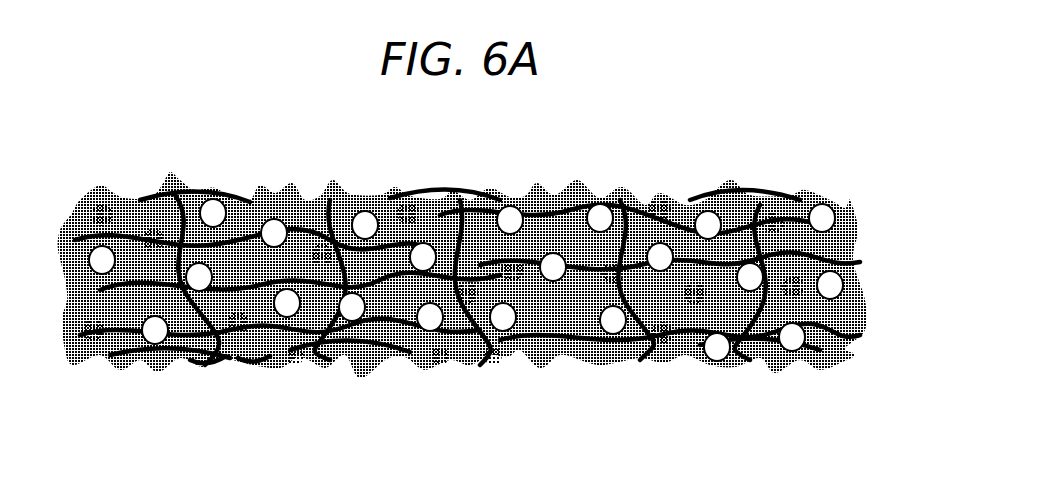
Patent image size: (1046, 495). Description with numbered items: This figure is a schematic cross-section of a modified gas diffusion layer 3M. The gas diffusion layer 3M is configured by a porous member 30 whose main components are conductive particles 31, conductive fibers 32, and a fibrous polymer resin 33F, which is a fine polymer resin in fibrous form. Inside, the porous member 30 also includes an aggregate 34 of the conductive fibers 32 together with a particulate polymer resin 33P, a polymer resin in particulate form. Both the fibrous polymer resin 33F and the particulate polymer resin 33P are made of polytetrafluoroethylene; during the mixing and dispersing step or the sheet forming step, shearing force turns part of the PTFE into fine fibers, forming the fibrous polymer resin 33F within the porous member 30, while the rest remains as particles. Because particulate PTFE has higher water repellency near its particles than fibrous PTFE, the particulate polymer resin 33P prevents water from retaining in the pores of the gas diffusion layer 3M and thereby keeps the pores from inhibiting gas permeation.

The porous member 30 is at (202, 128).
The conductive particles 31 is at (207, 367).
The conductive fibers 32 is at (253, 363).
The fibrous polymer resin 33F is at (295, 360).
The aggregate of the conductive fibers 34 is at (440, 360).
The particulate polymer resin 33P is at (493, 360).
The gas diffusion layer 3M is at (757, 475).